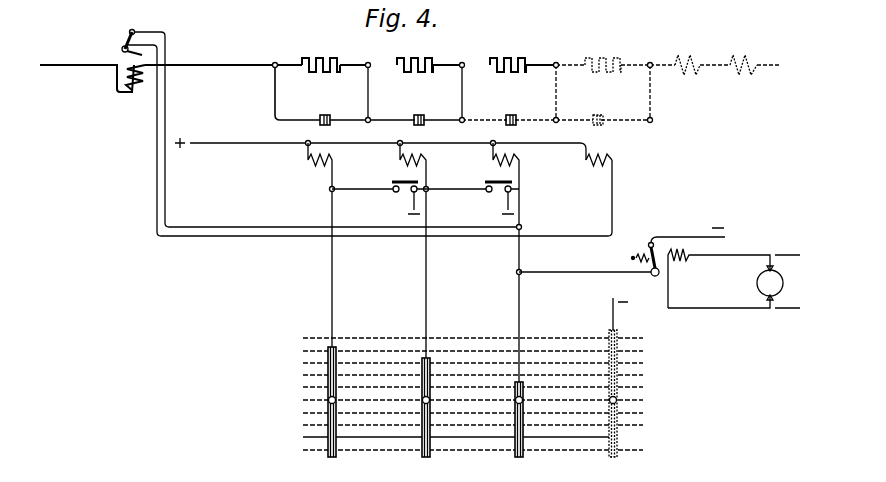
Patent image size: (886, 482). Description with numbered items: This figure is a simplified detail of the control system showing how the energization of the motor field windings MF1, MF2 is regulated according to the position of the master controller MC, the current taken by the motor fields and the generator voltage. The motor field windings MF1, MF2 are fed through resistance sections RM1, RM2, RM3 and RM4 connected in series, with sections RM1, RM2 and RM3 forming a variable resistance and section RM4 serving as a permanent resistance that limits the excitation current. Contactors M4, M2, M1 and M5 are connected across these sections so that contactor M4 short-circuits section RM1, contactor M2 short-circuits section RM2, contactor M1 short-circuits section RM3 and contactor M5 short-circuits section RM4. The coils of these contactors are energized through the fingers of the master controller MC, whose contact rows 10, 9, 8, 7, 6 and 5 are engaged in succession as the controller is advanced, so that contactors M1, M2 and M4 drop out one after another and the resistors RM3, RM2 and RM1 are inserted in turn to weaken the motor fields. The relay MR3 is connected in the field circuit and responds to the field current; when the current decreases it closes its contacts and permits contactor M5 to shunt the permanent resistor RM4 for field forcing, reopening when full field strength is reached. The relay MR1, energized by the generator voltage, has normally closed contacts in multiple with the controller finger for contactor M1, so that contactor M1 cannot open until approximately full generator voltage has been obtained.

The relay MR3 is at (347, 133).
The resistance section RM1 is at (321, 57).
The resistance section RM2 is at (415, 57).
The resistance section RM3 is at (508, 57).
The permanent resistance section RM4 is at (603, 57).
The motor field winding MF2 is at (688, 57).
The motor field winding MF1 is at (743, 57).
The contactor M4 is at (322, 112).
The contactor M2 is at (416, 112).
The contactor M1 is at (509, 112).
The contactor M5 is at (597, 112).
The relay MR1 is at (716, 268).
The master controller MC is at (475, 377).
The controller contact row 10 is at (461, 351).
The controller contact row 9 is at (464, 363).
The controller contact row 8 is at (464, 375).
The controller contact row 7 is at (464, 387).
The controller contact row 6 is at (464, 400).
The controller contact row 5 is at (464, 413).